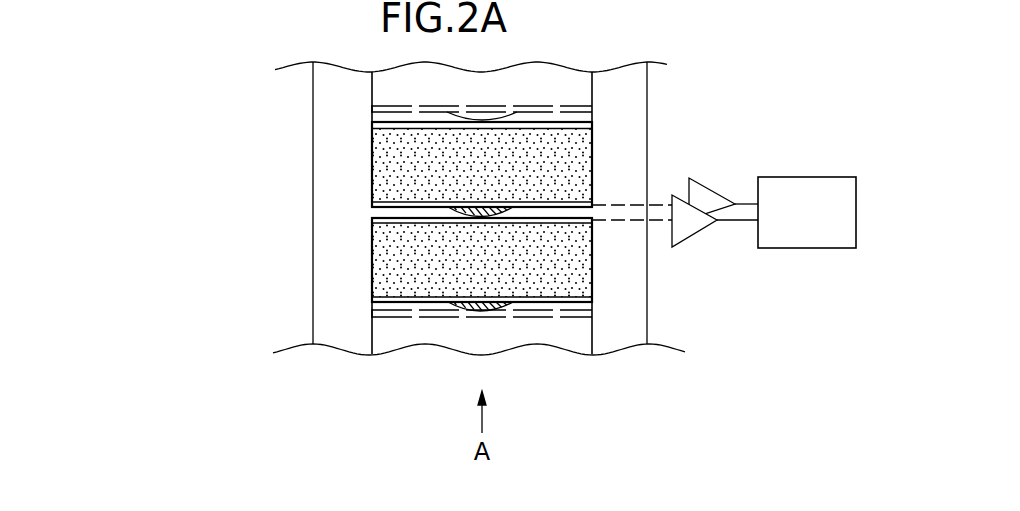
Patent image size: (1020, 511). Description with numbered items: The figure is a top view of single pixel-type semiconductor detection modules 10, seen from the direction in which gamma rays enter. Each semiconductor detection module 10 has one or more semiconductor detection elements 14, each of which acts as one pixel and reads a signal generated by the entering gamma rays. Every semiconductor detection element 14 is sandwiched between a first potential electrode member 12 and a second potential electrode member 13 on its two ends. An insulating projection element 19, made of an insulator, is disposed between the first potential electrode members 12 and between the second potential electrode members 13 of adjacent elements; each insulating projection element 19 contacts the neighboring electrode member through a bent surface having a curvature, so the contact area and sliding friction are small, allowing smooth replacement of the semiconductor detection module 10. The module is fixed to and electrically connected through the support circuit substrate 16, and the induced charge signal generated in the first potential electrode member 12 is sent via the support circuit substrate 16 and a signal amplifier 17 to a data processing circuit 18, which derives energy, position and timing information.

The semiconductor detection module 10 is at (595, 166).
The first potential electrode member 12 is at (372, 213).
The second potential electrode member 13 is at (372, 110).
The semiconductor detection element 14 is at (378, 170).
The support circuit substrate 16 is at (643, 328).
The signal amplifier 17 is at (718, 193).
The data processing circuit 18 is at (820, 250).
The insulating projection element 19 is at (487, 216).